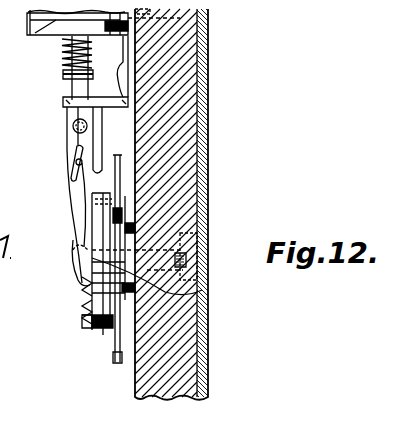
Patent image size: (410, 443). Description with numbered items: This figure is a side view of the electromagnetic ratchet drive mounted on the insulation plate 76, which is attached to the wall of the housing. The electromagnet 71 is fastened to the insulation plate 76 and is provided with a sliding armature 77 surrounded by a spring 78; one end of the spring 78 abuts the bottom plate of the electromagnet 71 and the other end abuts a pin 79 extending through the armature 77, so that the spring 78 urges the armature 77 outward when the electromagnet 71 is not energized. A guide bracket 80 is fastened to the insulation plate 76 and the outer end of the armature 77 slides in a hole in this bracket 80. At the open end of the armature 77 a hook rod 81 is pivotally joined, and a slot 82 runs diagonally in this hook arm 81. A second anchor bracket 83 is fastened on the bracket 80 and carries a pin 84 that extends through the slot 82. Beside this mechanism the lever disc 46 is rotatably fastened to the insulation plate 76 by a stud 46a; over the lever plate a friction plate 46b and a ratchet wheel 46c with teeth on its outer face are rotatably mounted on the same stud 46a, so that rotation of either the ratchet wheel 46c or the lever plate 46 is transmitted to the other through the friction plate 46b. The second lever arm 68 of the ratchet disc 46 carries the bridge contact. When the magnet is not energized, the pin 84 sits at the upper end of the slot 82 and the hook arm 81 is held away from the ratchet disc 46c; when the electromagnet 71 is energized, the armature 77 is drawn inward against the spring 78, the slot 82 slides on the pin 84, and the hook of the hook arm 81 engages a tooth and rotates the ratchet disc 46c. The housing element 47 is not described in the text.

The electromagnet 71 is at (56, 21).
The insulation plate 76 is at (207, 146).
The sliding armature 77 is at (68, 72).
The spring 78 is at (91, 44).
The pin 79 is at (70, 79).
The guide bracket 80 is at (118, 106).
The hook rod 81 is at (72, 192).
The slot 82 is at (76, 161).
The anchor bracket 83 is at (97, 131).
The pin 84 is at (78, 168).
The latch housing 47 is at (108, 190).
The lever disc 46 is at (202, 290).
The stud 46a is at (205, 222).
The friction plate 46b is at (107, 333).
The ratchet wheel 46c is at (90, 333).
The second lever arm 68 is at (115, 365).